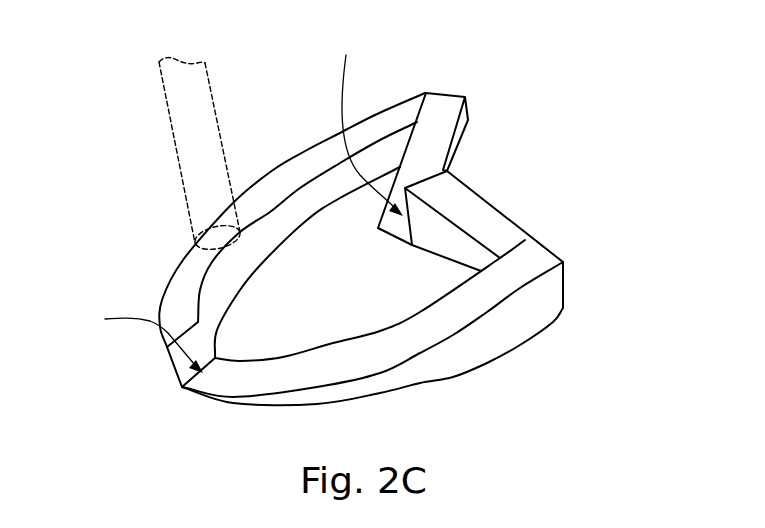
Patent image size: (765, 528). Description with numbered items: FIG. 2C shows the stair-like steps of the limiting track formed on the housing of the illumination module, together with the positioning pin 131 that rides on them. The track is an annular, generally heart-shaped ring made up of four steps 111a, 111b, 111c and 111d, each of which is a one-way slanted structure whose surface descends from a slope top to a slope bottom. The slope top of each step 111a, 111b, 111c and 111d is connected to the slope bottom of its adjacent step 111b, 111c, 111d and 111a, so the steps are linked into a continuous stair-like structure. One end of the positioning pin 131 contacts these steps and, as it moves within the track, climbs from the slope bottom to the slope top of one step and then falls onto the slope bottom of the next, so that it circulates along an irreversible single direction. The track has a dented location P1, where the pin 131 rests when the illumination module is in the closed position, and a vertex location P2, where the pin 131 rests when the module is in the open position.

The step 111a is at (447, 105).
The step 111b is at (280, 183).
The step 111c is at (335, 363).
The step 111d is at (470, 207).
The positioning pin 131 is at (192, 132).
The dented location P1 is at (369, 123).
The vertex location P2 is at (137, 341).